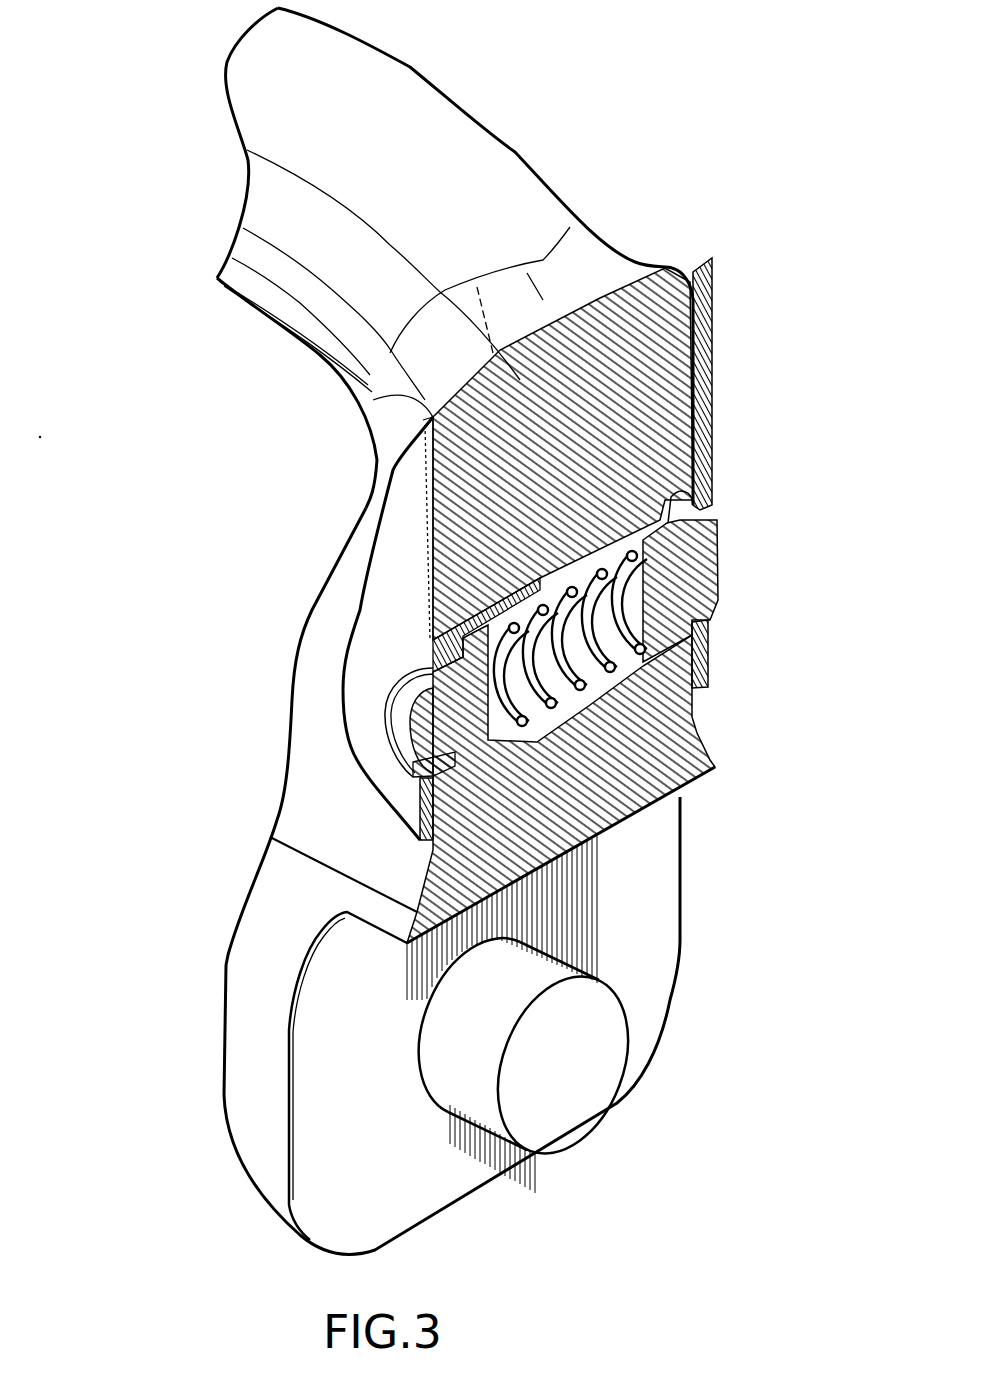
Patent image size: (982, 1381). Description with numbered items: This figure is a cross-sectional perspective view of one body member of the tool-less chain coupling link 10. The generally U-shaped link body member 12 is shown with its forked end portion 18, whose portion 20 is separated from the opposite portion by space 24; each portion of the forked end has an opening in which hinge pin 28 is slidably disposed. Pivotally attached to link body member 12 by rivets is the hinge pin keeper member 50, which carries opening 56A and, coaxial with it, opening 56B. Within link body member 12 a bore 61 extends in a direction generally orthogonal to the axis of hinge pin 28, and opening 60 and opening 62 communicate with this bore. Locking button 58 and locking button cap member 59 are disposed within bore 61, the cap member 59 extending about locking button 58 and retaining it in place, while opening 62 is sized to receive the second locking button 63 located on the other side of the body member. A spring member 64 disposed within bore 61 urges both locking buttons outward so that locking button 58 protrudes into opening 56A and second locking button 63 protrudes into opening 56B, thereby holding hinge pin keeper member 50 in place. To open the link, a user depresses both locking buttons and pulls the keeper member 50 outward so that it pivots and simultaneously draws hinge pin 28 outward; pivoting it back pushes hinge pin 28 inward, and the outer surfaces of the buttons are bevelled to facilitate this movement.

The tool-less chain coupling link 10 is at (105, 142).
The link body member 12 is at (483, 163).
The forked end portion 18 is at (225, 1097).
The portion 20 is at (226, 965).
The space 24 is at (652, 866).
The hinge pin 28 is at (563, 1052).
The hinge pin keeper member 50 is at (713, 341).
The opening 56A is at (387, 700).
The opening 56B is at (710, 642).
The locking button 58 is at (403, 732).
The locking button cap member 59 is at (433, 652).
The opening 60 is at (413, 777).
The bore 61 is at (555, 730).
The opening 62 is at (700, 490).
The second locking button 63 is at (718, 557).
The spring member 64 is at (560, 632).